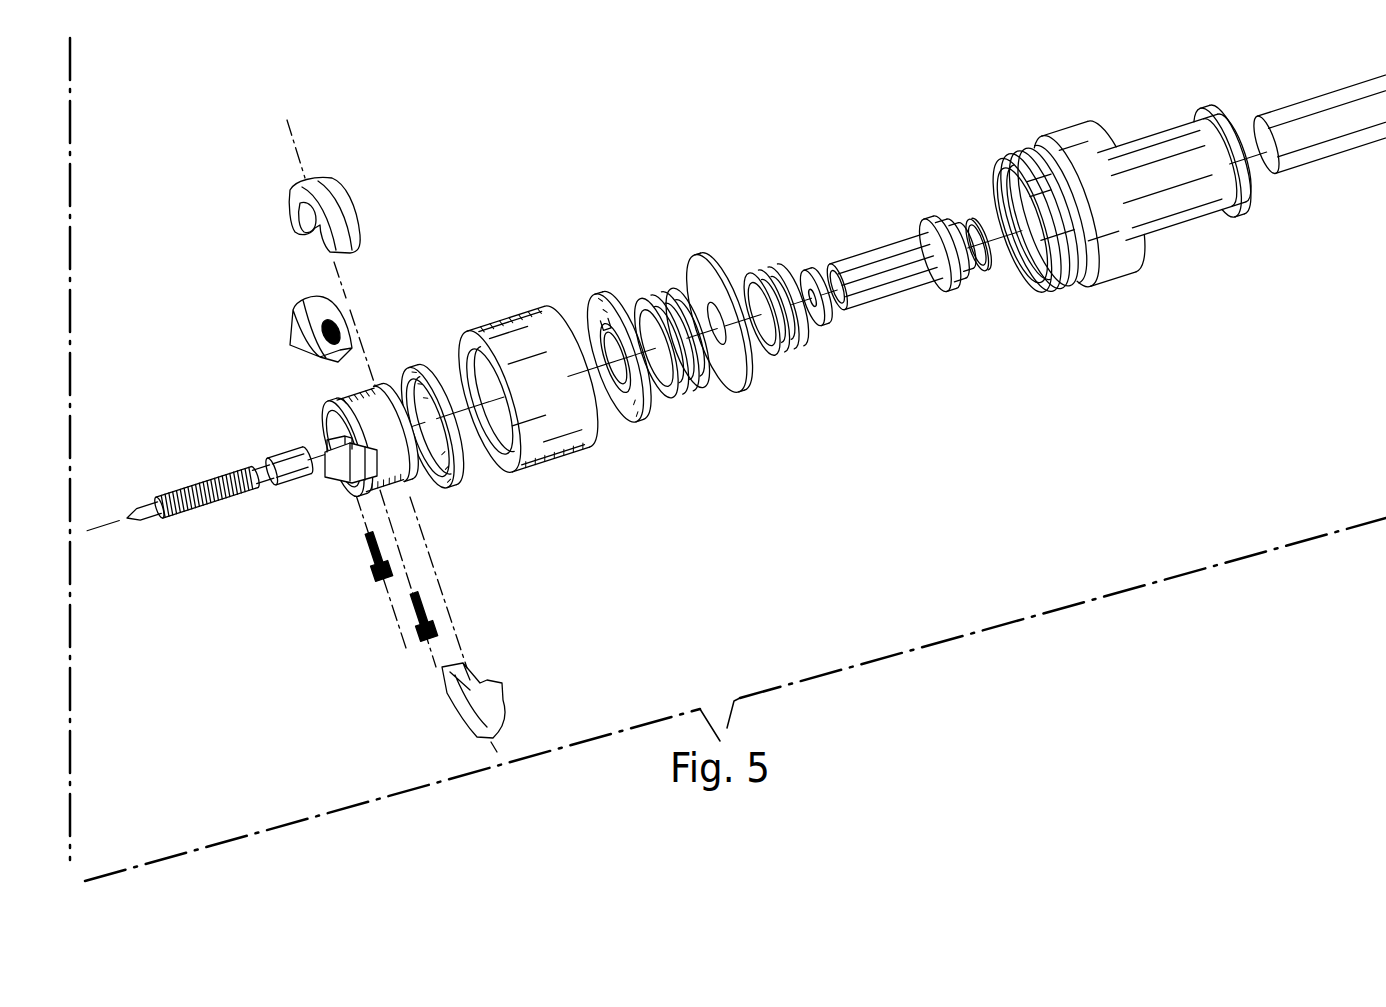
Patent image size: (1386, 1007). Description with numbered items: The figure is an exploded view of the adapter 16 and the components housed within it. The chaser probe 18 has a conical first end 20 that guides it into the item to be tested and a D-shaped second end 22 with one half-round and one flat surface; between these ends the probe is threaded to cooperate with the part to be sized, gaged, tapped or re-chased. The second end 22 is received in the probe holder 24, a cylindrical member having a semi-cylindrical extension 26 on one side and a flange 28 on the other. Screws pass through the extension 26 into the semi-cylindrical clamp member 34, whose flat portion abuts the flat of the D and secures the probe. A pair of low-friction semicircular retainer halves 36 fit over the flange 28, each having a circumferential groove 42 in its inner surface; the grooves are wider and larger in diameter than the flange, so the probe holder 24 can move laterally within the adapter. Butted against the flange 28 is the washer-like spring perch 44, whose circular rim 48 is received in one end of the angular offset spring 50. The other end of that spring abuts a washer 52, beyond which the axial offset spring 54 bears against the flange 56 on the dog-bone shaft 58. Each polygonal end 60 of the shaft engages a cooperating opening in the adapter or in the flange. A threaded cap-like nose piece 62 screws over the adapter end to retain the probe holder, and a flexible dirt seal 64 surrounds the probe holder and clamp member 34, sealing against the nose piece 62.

The adapter 16 is at (1047, 132).
The chaser probe 18 is at (208, 476).
The conical first end 20 is at (137, 520).
The D-shaped second end 22 is at (293, 480).
The probe holder 24 is at (410, 480).
The semi-cylindrical extension 26 is at (353, 497).
The flange 28 is at (412, 470).
The semi-cylindrical clamp member 34 is at (290, 328).
The retainer halves 36 is at (320, 178).
The circumferential groove 42 is at (453, 687).
The spring perch 44 is at (643, 427).
The circular rim 48 is at (595, 333).
The angular offset spring 50 is at (663, 290).
The washer 52 is at (743, 397).
The axial offset spring 54 is at (787, 348).
The flange 56 is at (927, 217).
The dog-bone shaft 58 is at (897, 290).
The end of dog-bone shaft 60 is at (813, 267).
The nose piece 62 is at (508, 317).
The dirt seal 64 is at (414, 370).